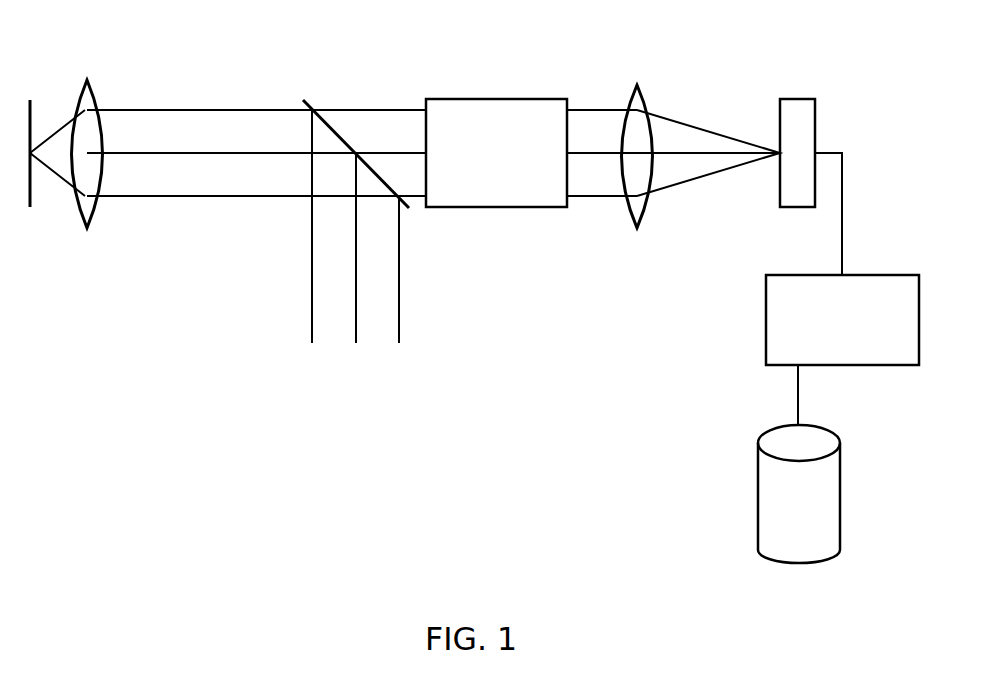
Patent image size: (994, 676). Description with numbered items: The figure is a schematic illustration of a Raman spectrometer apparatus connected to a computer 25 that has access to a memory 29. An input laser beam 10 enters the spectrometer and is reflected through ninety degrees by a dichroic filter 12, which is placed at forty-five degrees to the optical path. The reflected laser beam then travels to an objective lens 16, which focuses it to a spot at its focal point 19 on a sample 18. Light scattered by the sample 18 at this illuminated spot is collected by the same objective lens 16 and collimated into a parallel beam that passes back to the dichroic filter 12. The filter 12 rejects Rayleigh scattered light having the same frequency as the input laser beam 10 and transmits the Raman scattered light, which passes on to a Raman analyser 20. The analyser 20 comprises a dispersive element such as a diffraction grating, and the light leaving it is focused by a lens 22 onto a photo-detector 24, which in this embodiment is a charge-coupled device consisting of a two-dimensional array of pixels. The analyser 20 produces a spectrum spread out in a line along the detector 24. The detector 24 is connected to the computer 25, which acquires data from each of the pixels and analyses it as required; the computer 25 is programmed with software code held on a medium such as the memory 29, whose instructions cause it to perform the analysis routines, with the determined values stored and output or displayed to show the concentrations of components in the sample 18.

The input laser beam 10 is at (392, 322).
The dichroic filter 12 is at (303, 100).
The objective lens 16 is at (87, 80).
The sample 18 is at (30, 100).
The focal point 19 is at (31, 160).
The Raman analyser 20 is at (500, 98).
The lens 22 is at (637, 85).
The photo-detector 24 is at (797, 99).
The computer 25 is at (766, 314).
The memory 29 is at (758, 503).